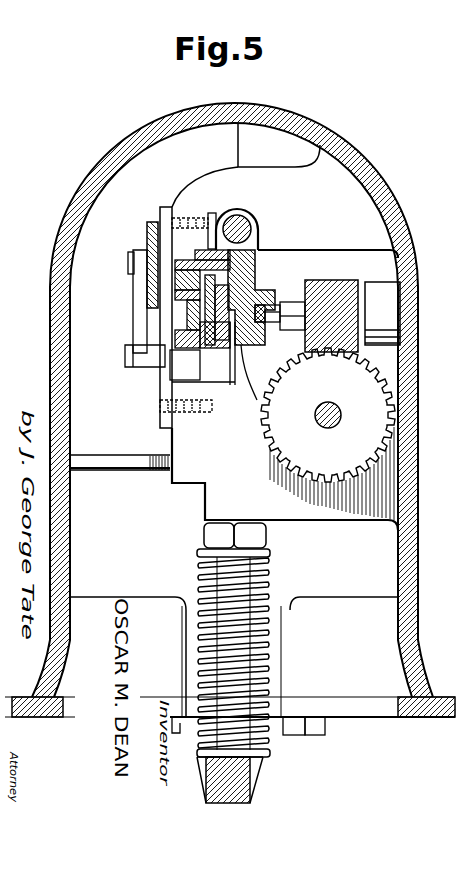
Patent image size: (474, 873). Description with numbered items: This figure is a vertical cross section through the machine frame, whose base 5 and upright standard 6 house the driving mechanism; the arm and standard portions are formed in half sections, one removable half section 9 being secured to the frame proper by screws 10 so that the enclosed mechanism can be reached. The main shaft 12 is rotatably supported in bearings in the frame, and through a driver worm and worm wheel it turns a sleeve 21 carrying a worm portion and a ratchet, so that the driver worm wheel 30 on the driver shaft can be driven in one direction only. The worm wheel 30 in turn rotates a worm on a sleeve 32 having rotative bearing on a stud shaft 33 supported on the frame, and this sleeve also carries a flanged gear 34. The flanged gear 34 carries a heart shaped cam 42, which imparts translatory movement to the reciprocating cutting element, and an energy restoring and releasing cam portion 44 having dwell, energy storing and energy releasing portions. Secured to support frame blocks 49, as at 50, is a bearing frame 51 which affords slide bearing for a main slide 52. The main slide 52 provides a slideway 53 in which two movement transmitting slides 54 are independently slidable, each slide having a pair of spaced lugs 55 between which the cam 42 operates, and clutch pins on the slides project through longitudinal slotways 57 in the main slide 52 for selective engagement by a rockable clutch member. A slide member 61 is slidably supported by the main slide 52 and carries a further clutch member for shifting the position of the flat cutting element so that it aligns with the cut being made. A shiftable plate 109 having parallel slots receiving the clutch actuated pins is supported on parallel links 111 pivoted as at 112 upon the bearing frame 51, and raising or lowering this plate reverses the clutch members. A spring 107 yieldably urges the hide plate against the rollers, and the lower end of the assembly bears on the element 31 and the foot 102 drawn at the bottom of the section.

The base 5 is at (416, 719).
The standard 6 is at (419, 478).
The removable half section 9 is at (50, 274).
The screws 10 is at (152, 470).
The main shaft 12 is at (255, 220).
The sleeve 21 is at (333, 404).
The driver worm wheel 30 is at (328, 434).
The end block 31 is at (368, 282).
The sleeve 32 is at (320, 280).
The stud shaft 33 is at (284, 304).
The flanged gear 34 is at (268, 250).
The heart shaped cam 42 is at (262, 396).
The energy restoring and releasing cam portion 44 is at (186, 398).
The support frame blocks 49 is at (199, 197).
The securing means 50 is at (178, 216).
The bearing frame 51 is at (213, 220).
The main slide 52 is at (200, 355).
The slideway 53 is at (175, 282).
The movement transmitting slides 54 is at (205, 322).
The spaced lugs 55 is at (215, 332).
The longitudinal slotways 57 is at (187, 308).
The slide member 61 is at (195, 265).
The tapered plug 102 is at (263, 779).
The spring 107 is at (272, 600).
The shiftable plate 109 is at (147, 229).
The parallel links 111 is at (133, 257).
The pivots 112 is at (133, 362).